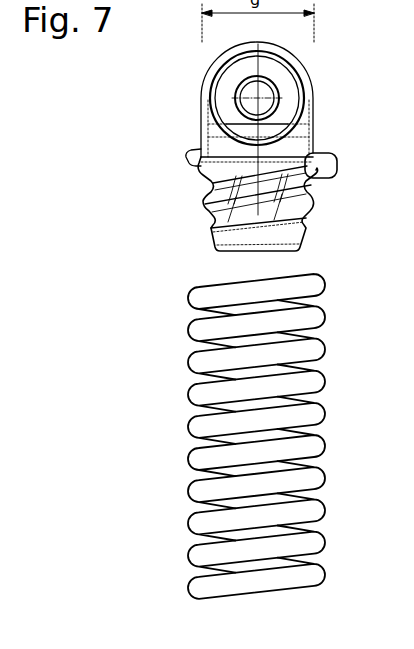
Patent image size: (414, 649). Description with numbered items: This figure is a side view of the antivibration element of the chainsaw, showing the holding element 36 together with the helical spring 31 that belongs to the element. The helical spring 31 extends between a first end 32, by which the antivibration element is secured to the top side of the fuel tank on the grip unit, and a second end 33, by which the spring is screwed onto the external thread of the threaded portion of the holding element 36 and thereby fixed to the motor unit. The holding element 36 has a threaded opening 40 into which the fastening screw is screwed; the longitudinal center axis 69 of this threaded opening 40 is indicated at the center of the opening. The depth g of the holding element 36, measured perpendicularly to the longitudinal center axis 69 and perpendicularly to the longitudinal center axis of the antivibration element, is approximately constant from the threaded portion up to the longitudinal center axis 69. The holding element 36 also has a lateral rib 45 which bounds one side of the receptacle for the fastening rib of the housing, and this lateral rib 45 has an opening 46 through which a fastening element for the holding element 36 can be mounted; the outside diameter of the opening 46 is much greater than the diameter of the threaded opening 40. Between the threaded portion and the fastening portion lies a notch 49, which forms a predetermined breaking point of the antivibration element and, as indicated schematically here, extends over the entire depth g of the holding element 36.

The holding element 36 is at (186, 119).
The threaded opening 40 is at (265, 84).
The longitudinal center axis 69 is at (250, 96).
The opening 46 is at (308, 88).
The lateral rib 45 is at (302, 120).
The notch 49 is at (265, 112).
The helical spring 31 is at (308, 448).
The second end 33 is at (326, 279).
The first end 32 is at (197, 590).